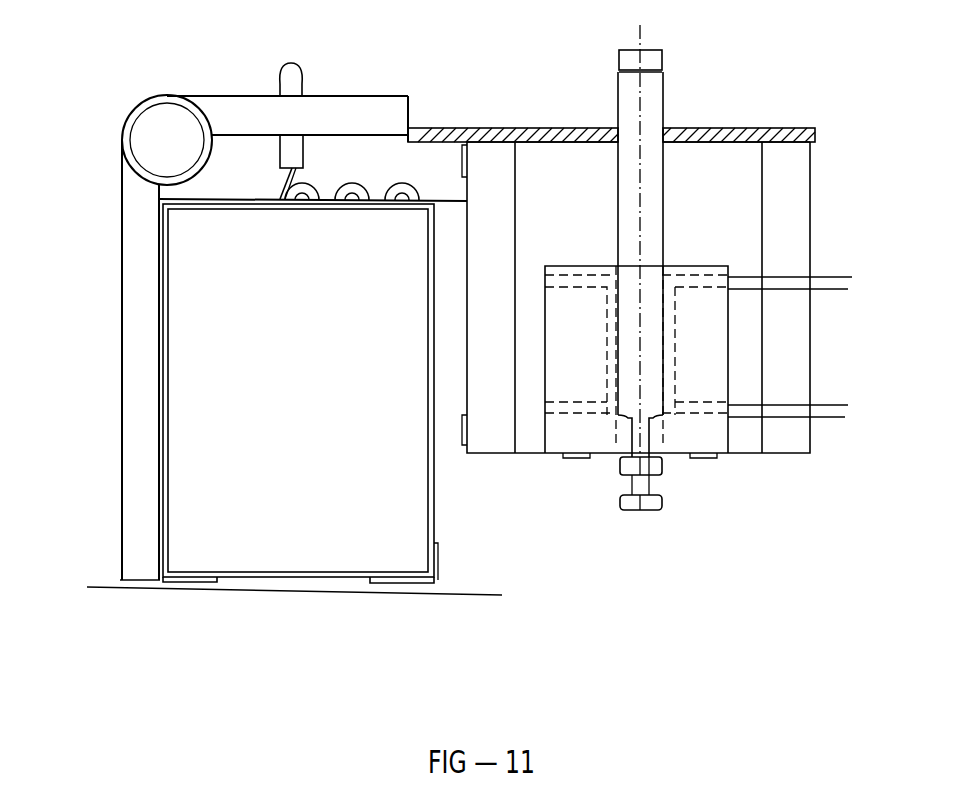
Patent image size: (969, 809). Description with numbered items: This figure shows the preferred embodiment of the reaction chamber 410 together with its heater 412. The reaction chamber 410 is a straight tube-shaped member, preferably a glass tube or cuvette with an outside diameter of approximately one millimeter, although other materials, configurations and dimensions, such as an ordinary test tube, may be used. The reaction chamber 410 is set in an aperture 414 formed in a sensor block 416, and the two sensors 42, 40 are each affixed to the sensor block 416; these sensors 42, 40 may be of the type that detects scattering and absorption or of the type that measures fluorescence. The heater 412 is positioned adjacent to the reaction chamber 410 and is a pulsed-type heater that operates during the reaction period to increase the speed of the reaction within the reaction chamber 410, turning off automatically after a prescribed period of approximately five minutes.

The heater 412 is at (192, 350).
The reaction chamber 410 is at (649, 166).
The sensor block 416 is at (730, 345).
The aperture 414 is at (612, 380).
The sensor 42 is at (728, 277).
The sensor 40 is at (722, 412).